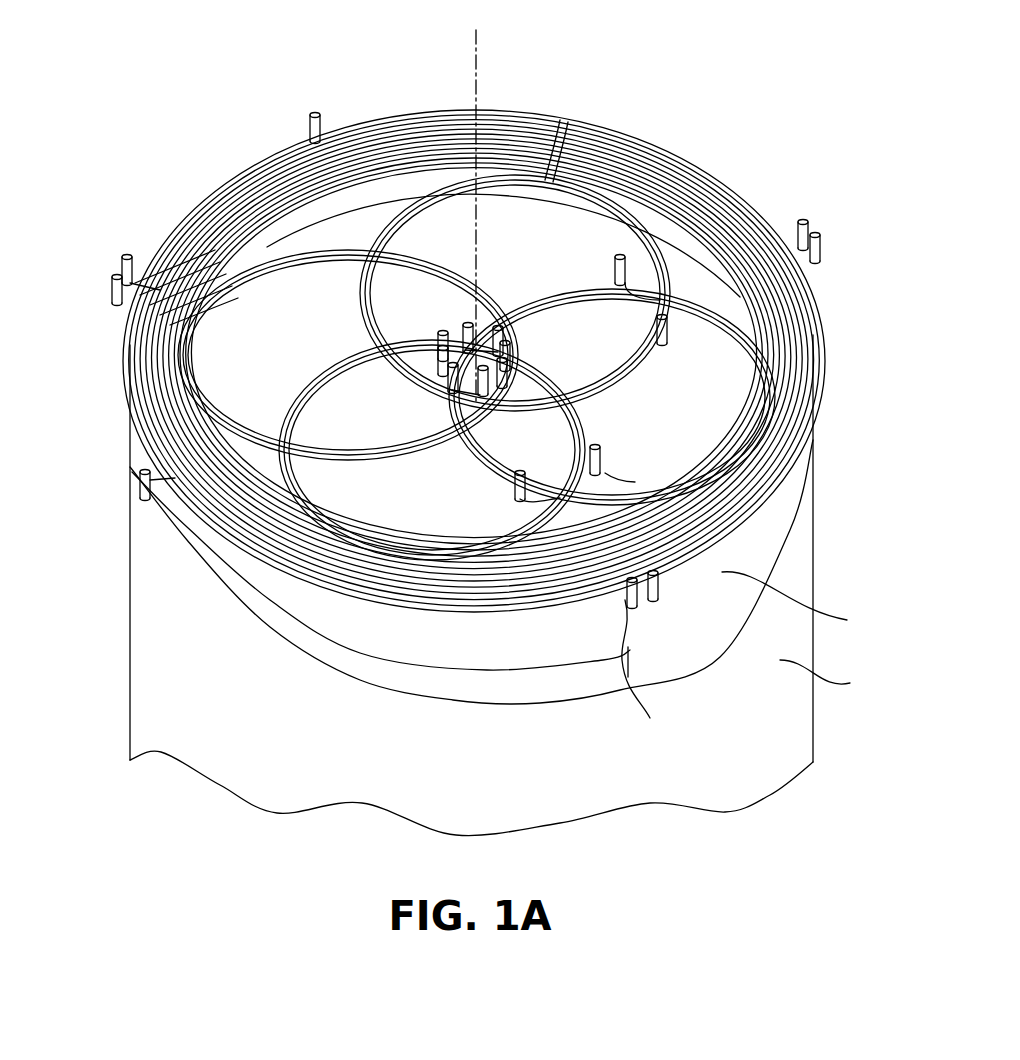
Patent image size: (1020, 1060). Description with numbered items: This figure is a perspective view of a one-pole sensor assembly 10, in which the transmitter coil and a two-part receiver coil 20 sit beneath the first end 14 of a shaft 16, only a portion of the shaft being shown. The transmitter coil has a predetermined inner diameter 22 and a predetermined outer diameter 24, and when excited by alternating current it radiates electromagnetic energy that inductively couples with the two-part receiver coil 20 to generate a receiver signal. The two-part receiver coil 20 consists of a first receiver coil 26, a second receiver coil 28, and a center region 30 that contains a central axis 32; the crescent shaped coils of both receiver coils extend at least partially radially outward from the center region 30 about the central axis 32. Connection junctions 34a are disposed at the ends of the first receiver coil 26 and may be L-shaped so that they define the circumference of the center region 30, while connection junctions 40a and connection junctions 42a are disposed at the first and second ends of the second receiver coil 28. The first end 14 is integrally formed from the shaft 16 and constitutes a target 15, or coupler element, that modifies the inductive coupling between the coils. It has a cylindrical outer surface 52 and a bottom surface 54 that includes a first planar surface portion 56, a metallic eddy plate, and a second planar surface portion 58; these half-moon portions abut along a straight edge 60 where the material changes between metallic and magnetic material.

The sensor assembly 10 is at (461, 346).
The first end 14 is at (506, 540).
The target 15 is at (792, 500).
The shaft 16 is at (775, 818).
The two-part receiver coil 20 is at (507, 357).
The inner diameter 22 is at (195, 350).
The outer diameter 24 is at (178, 218).
The first receiver coil 26 is at (387, 250).
The second receiver coil 28 is at (540, 175).
The center region 30 is at (440, 425).
The central axis 32 is at (480, 58).
The connection junctions 34a is at (442, 335).
The connection junctions 40a is at (505, 345).
The connection junctions 42a is at (654, 663).
The cylindrical outer surface 52 is at (831, 678).
The bottom surface 54 is at (801, 603).
The first planar surface portion 56 is at (493, 651).
The second planar surface portion 58 is at (758, 560).
The straight edge 60 is at (643, 673).